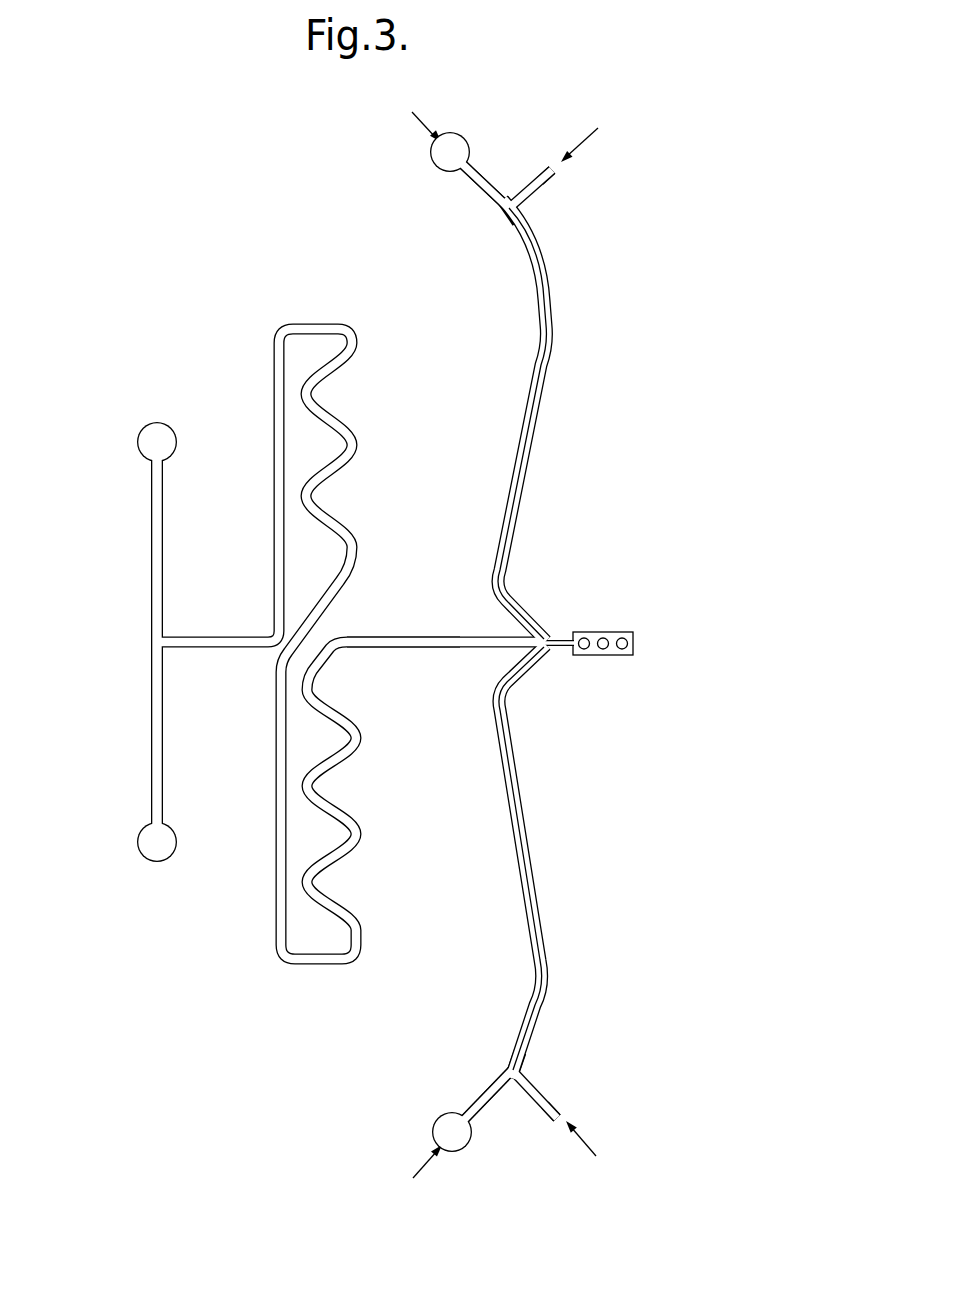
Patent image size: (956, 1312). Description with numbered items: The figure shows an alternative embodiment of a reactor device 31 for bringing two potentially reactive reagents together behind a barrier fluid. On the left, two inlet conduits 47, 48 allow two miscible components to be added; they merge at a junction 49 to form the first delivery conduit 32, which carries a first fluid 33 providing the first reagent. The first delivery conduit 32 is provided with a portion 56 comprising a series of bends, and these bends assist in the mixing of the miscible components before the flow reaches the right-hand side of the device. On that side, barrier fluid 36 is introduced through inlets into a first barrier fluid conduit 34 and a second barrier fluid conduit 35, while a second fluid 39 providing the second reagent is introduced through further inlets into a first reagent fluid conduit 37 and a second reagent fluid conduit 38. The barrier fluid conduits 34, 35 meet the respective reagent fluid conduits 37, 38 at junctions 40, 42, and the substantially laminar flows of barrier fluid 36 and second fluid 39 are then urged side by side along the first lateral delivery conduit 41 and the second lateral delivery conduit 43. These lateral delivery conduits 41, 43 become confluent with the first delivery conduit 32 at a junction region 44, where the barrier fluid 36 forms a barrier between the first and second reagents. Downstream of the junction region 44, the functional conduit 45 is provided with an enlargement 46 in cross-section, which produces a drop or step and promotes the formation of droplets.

The reactor device 31 is at (211, 928).
The first delivery conduit 32 is at (401, 650).
The first fluid 33 is at (423, 637).
The first barrier fluid conduit 34 is at (485, 178).
The second barrier fluid conduit 35 is at (462, 1110).
The barrier fluid 36 is at (473, 183).
The first reagent fluid conduit 37 is at (532, 200).
The second reagent fluid conduit 38 is at (535, 1110).
The second fluid 39 is at (549, 181).
The junction 40 is at (514, 212).
The first lateral delivery conduit 41 is at (530, 356).
The junction 42 is at (518, 1073).
The second lateral delivery conduit 43 is at (548, 932).
The junction region 44 is at (548, 652).
The functional conduit 45 is at (612, 658).
The enlargement 46 is at (566, 632).
The inlet conduit 47 is at (152, 552).
The inlet conduit 48 is at (152, 744).
The junction 49 is at (166, 645).
The portion comprising a series of bends 56 is at (360, 307).